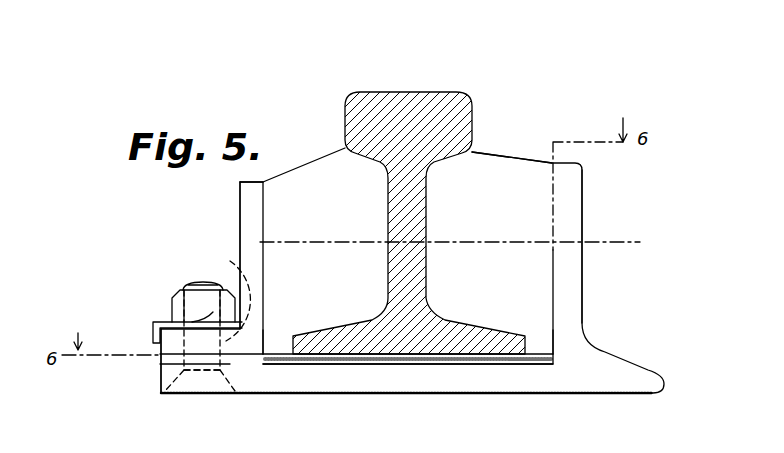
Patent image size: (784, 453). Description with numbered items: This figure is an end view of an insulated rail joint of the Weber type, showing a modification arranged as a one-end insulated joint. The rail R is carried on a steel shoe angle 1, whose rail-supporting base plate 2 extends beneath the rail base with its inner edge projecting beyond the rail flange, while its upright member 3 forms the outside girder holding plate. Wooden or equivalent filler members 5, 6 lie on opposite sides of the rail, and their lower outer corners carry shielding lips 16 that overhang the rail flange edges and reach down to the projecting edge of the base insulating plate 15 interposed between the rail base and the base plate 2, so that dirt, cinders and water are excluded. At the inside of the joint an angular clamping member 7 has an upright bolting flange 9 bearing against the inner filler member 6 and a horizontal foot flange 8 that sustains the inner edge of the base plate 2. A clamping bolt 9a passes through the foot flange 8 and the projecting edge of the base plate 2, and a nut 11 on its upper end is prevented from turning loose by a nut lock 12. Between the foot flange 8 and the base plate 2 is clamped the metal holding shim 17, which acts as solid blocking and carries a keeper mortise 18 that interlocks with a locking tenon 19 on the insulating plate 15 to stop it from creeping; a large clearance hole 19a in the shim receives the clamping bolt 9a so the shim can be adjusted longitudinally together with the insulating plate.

The rails R is at (405, 92).
The steel shoe angle 1 is at (610, 355).
The rail-supporting base plate 2 is at (356, 371).
The upright member 3 is at (582, 186).
The filler member 5 is at (512, 162).
The inner filler member 6 is at (318, 165).
The angular clamping member 7 is at (240, 210).
The horizontal foot flange 8 is at (168, 342).
The upright bolting flange 9 is at (263, 182).
The clamping bolt 9a is at (193, 282).
The nut 11 is at (172, 298).
The nut lock 12 is at (160, 320).
The insulating plate 15 is at (527, 365).
The shielding lips 16 is at (285, 342).
The holding shim 17 is at (168, 363).
The keeper mortise 18 is at (228, 382).
The locking tenon 19 is at (266, 371).
The clearance hole 19a is at (238, 278).